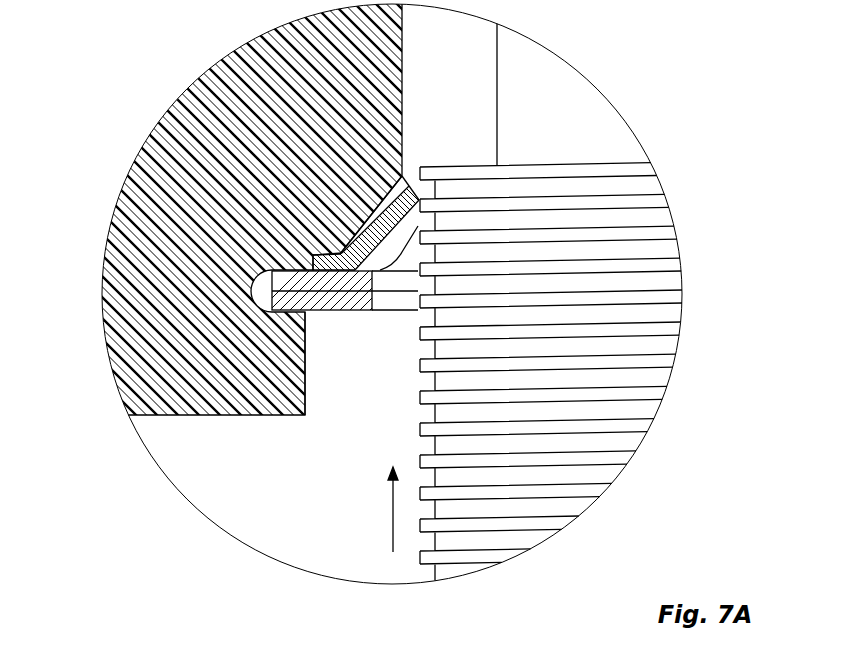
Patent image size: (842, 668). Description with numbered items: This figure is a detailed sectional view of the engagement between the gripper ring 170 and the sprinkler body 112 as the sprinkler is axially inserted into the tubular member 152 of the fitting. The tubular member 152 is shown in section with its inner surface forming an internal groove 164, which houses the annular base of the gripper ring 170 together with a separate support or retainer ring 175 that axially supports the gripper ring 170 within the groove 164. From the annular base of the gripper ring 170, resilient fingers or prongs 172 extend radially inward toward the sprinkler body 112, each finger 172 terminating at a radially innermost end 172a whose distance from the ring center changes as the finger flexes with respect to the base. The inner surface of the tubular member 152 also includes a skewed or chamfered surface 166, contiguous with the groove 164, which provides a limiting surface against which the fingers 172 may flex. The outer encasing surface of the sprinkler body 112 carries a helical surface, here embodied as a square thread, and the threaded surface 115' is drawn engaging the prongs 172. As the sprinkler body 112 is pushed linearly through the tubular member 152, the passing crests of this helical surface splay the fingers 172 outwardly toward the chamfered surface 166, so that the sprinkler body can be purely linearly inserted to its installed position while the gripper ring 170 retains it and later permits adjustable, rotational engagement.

The tubular member 152 is at (218, 88).
The chamfered surface 166 is at (383, 200).
The radially innermost end 172a is at (401, 175).
The fingers or prongs 172 is at (372, 217).
The gripper ring 170 is at (314, 258).
The support or retainer ring 175 is at (275, 296).
The chamfer 115' is at (485, 199).
The sprinkler body 112 is at (662, 277).
The internal groove 164 is at (311, 316).